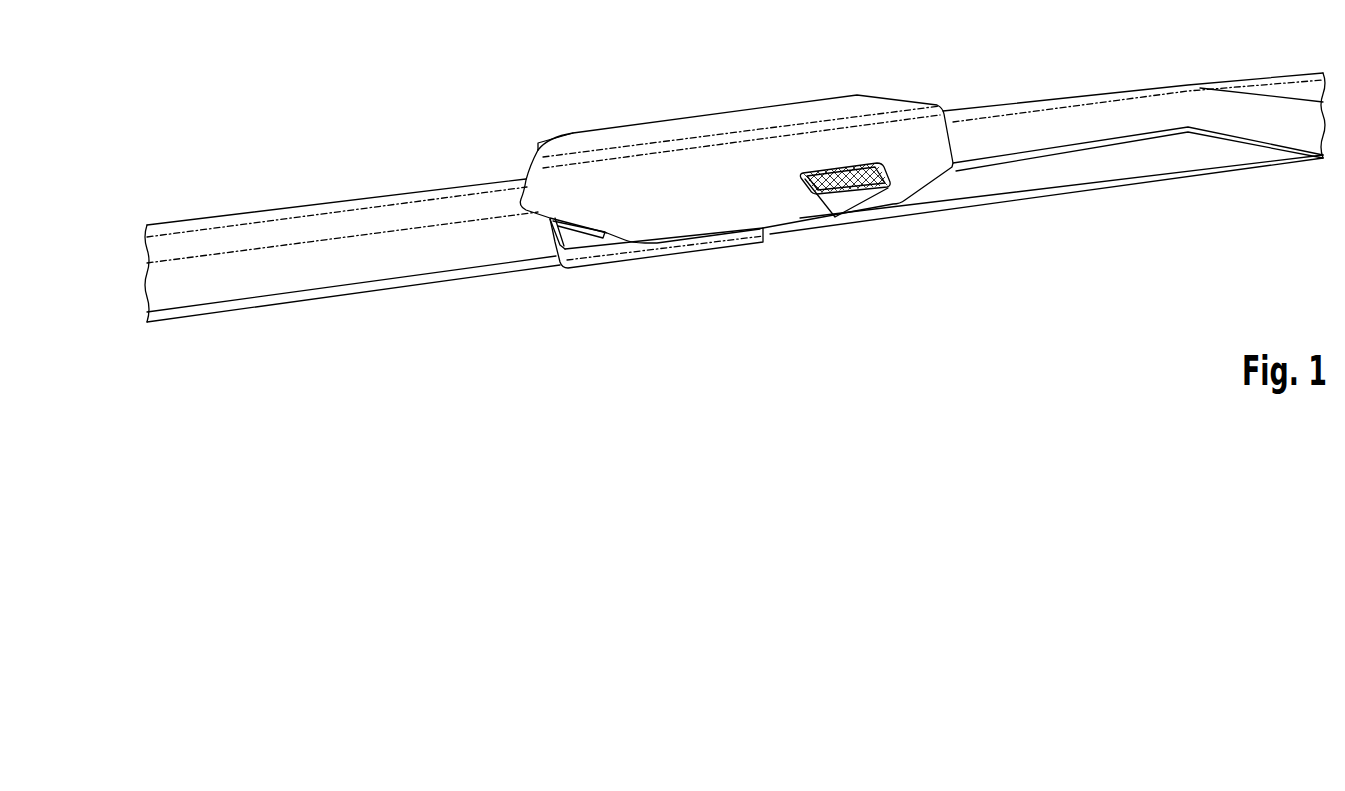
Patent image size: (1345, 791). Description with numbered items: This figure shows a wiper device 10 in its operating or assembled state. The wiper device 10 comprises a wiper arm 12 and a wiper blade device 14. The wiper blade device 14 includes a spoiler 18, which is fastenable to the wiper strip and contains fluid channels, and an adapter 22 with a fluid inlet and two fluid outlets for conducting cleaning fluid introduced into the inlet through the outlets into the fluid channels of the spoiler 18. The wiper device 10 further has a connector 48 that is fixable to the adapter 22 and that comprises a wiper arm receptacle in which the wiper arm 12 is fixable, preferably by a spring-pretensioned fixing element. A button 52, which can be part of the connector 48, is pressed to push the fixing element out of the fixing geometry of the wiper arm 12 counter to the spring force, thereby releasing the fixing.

The wiper device 10 is at (528, 93).
The wiper arm 12 is at (1058, 125).
The wiper blade device 14 is at (773, 282).
The spoiler 18 is at (327, 228).
The adapter 22 is at (612, 254).
The connector 48 is at (675, 160).
The button 52 is at (853, 178).